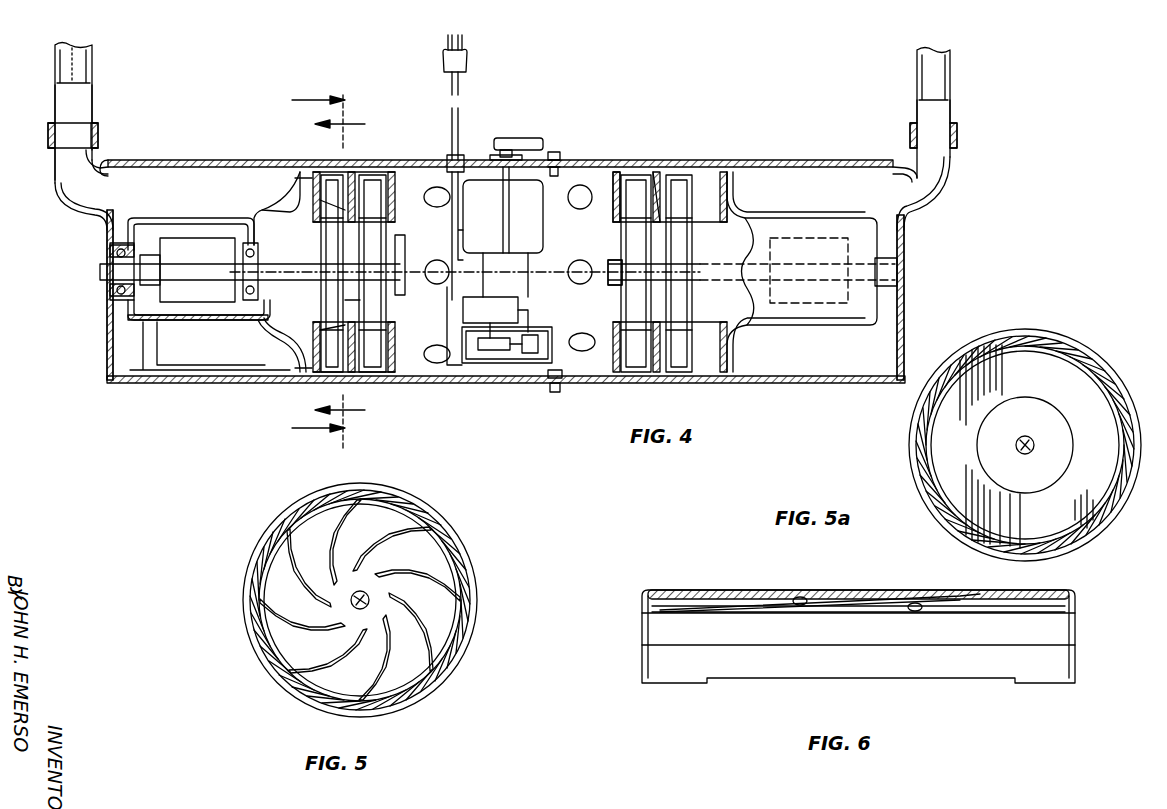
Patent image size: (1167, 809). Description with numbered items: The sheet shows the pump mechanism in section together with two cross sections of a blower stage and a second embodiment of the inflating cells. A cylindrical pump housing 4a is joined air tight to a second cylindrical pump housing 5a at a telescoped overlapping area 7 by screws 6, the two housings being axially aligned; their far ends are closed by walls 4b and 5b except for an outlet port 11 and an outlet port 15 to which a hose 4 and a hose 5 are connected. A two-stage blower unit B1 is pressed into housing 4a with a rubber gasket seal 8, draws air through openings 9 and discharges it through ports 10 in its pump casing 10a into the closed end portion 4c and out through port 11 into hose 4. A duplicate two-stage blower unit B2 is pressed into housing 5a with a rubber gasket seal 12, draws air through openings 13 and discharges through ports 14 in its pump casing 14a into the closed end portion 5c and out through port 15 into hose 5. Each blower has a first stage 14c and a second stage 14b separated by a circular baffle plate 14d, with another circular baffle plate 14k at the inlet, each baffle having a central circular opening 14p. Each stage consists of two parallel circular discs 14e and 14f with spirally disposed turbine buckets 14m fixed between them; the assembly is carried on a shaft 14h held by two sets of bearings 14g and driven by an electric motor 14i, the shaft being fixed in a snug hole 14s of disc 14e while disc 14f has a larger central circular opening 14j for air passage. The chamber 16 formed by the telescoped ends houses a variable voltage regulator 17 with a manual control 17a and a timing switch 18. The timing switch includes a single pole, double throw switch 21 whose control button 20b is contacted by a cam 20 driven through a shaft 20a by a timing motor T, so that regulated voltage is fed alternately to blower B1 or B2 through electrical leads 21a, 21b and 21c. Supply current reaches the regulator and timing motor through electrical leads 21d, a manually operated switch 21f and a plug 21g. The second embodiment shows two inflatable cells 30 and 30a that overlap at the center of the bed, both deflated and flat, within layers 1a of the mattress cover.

In FIG. 4, the hose 4 is at (58, 62).
In FIG. 4, the hose 5 is at (950, 80).
In FIG. 4, the cylindrical pump housing 4a is at (190, 160).
In FIG. 5, the cylindrical pump housing 4a is at (275, 518).
In FIG. 5a, the cylindrical pump housing 4a is at (995, 330).
In FIG. 4, the end wall 4b is at (107, 318).
In FIG. 4, the closed end portion 4c is at (118, 385).
In FIG. 4, the second cylindrical pump housing 5a is at (815, 162).
In FIG. 4, the end wall 5b is at (904, 326).
In FIG. 4, the closed end portion 5c is at (845, 160).
In FIG. 4, the outlet port 11 is at (48, 136).
In FIG. 4, the outlet port 15 is at (955, 132).
In FIG. 4, the screws 6 is at (554, 150).
In FIG. 4, the telescoped overlapping area 7 is at (580, 150).
In FIG. 4, the rubber gasket seal 8 is at (290, 143).
In FIG. 5, the rubber gasket seal 8 is at (478, 612).
In FIG. 4, the openings 9 is at (437, 185).
In FIG. 5a, the openings 9 is at (1038, 335).
In FIG. 4, the ports 10 is at (280, 200).
In FIG. 4, the pump casing 10a is at (195, 218).
In FIG. 5, the pump casing 10a is at (478, 598).
In FIG. 5a, the pump casing 10a is at (1025, 424).
In FIG. 4, the rubber gasket seal 12 is at (660, 170).
In FIG. 4, the openings 13 is at (580, 170).
In FIG. 4, the ports 14 is at (740, 200).
In FIG. 4, the pump casing 14a is at (625, 330).
In FIG. 4, the second blower stage 14b is at (300, 385).
In FIG. 4, the first blower stage 14c is at (378, 400).
In FIG. 4, the circular baffle plate 14d is at (350, 175).
In FIG. 4, the circular disc 14e is at (328, 258).
In FIG. 5, the circular disc 14e is at (430, 548).
In FIG. 4, the circular disc 14f is at (400, 232).
In FIG. 5a, the circular disc 14f is at (972, 340).
In FIG. 4, the bearings 14g is at (110, 250).
In FIG. 4, the shaft 14h is at (320, 282).
In FIG. 5, the shaft 14h is at (370, 595).
In FIG. 5a, the shaft 14h is at (1022, 442).
In FIG. 4, the electric motor 14i is at (155, 240).
In FIG. 4, the central circular opening 14j is at (320, 200).
In FIG. 4, the circular baffle plate 14k is at (395, 175).
In FIG. 4, the turbine buckets or blades 14m is at (330, 185).
In FIG. 5, the turbine buckets or blades 14m is at (287, 553).
In FIG. 4, the central circular opening 14p is at (615, 258).
In FIG. 4, the hole 14s is at (330, 318).
In FIG. 5, the hole 14s is at (292, 632).
In FIG. 4, the chamber 16 is at (562, 243).
In FIG. 4, the variable voltage regulator 17 is at (503, 216).
In FIG. 4, the manual control 17a is at (522, 138).
In FIG. 4, the timing switch 18 is at (465, 420).
In FIG. 4, the cam 20 is at (485, 365).
In FIG. 4, the shaft 20a is at (480, 348).
In FIG. 4, the control button 20b is at (530, 355).
In FIG. 4, the single pole, double throw switch 21 is at (580, 335).
In FIG. 4, the electrical leads 21a is at (143, 345).
In FIG. 4, the electrical leads 21b is at (447, 330).
In FIG. 4, the electrical lead 21c is at (530, 298).
In FIG. 4, the electrical leads 21d is at (452, 96).
In FIG. 4, the manually operated switch 21f is at (465, 155).
In FIG. 4, the plug 21g is at (470, 58).
In FIG. 4, the two-stage blower unit B1 is at (250, 250).
In FIG. 4, the two-stage blower unit B2 is at (714, 241).
In FIG. 4, the timing motor T is at (490, 310).
In FIG. 6, the mattress pad layer 1a is at (1058, 630).
In FIG. 6, the inflatable cell 30 is at (715, 592).
In FIG. 6, the inflatable cell 30a is at (1010, 597).